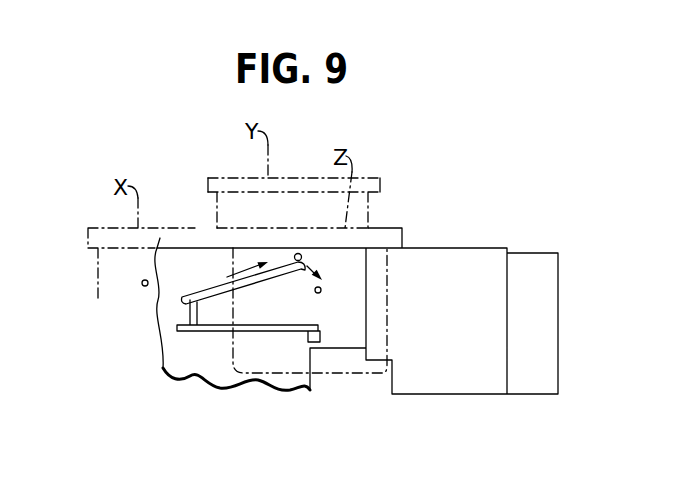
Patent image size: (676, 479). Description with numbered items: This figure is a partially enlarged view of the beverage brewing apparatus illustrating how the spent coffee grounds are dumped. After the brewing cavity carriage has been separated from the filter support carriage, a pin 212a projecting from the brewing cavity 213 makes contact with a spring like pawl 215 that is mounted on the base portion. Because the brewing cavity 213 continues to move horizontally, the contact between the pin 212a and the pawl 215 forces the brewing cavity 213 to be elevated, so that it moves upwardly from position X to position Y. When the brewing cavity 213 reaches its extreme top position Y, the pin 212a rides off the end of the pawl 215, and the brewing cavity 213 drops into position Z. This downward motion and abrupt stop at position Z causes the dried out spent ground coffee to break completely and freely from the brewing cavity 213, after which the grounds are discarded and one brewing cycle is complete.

The brewing cavity 213 is at (394, 185).
The spring like pawl 215 is at (190, 297).
The pin 212a is at (316, 293).